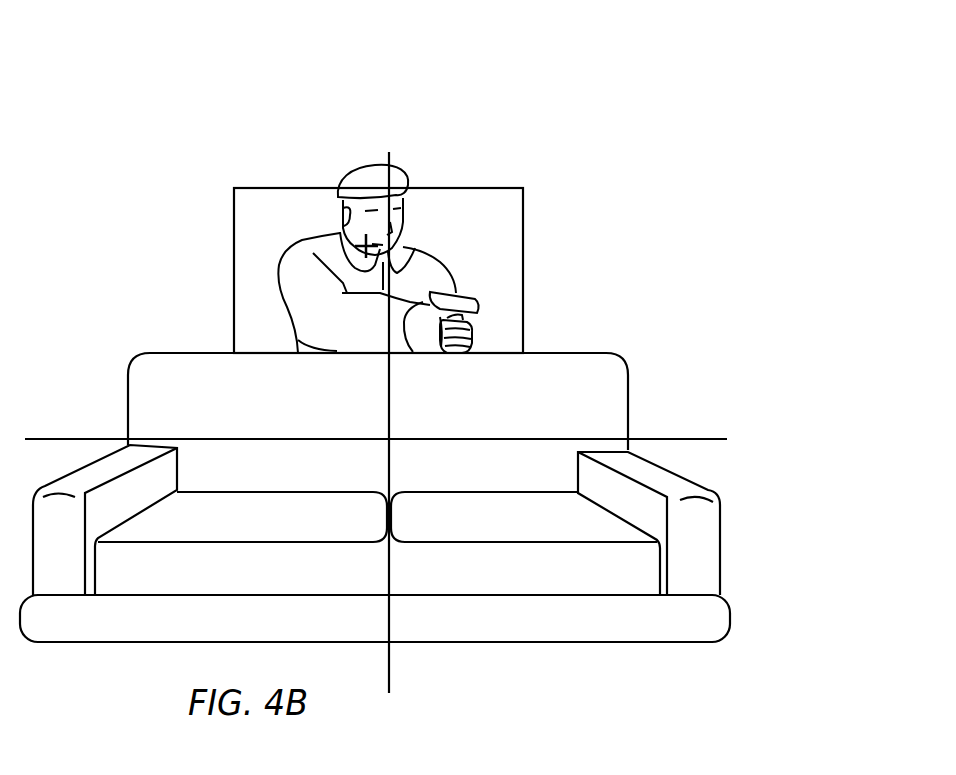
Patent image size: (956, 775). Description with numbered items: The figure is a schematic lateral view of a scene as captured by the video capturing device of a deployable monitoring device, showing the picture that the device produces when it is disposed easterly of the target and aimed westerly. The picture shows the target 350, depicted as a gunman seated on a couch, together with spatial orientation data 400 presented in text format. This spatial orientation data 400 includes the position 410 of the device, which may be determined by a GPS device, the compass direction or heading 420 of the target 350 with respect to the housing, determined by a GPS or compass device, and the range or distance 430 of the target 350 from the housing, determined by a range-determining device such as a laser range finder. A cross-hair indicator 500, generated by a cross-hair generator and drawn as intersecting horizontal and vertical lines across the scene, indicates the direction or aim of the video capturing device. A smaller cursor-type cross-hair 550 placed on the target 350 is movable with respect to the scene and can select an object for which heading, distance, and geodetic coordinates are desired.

The target 350 is at (193, 328).
The spatial orientation data 400 is at (585, 127).
The position 410 is at (712, 75).
The heading 420 is at (690, 125).
The distance 430 is at (630, 173).
The cross-hair indicator 500 is at (667, 440).
The cursor-type cross-hair 550 is at (342, 237).